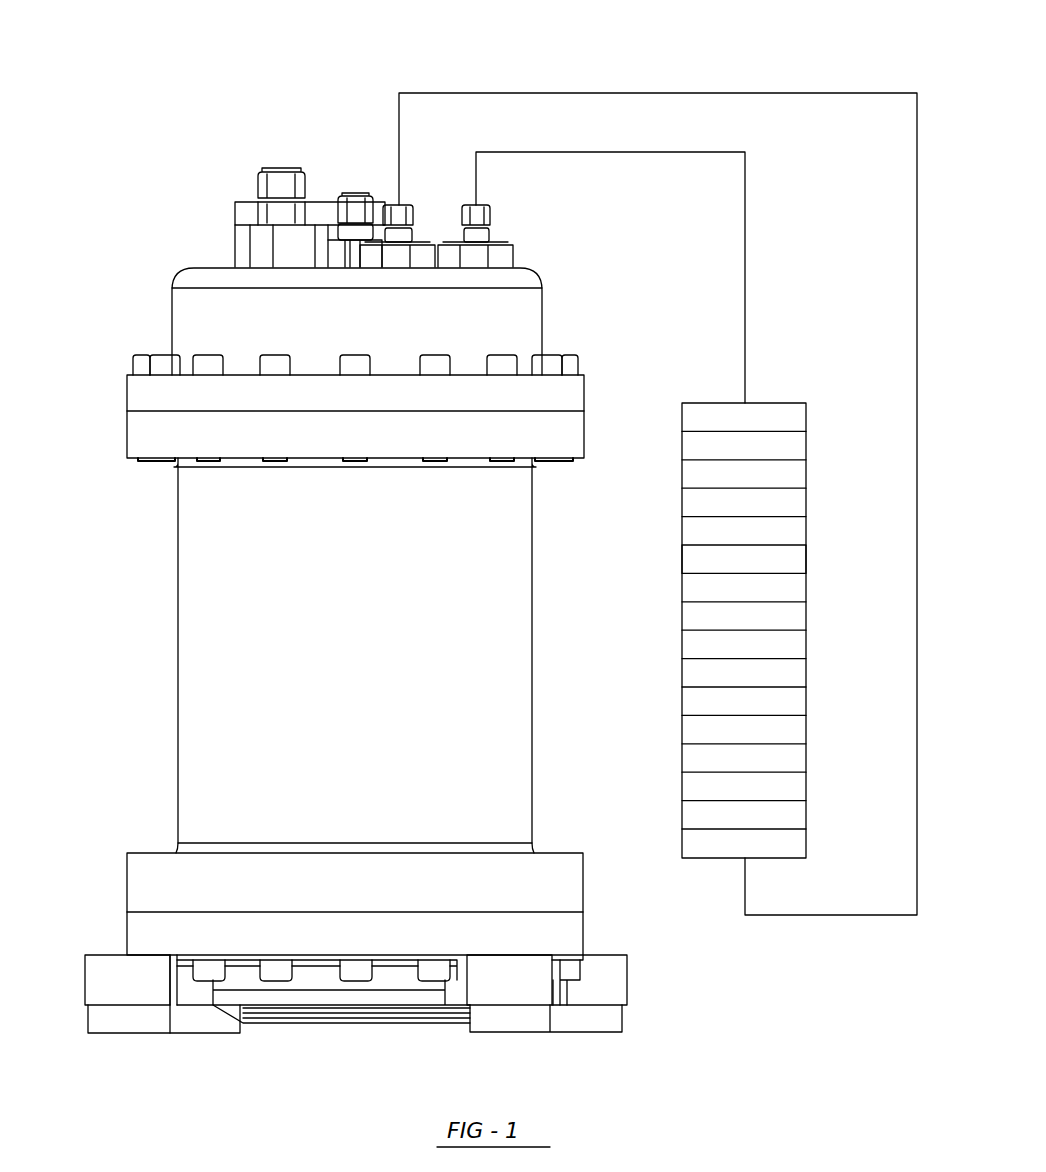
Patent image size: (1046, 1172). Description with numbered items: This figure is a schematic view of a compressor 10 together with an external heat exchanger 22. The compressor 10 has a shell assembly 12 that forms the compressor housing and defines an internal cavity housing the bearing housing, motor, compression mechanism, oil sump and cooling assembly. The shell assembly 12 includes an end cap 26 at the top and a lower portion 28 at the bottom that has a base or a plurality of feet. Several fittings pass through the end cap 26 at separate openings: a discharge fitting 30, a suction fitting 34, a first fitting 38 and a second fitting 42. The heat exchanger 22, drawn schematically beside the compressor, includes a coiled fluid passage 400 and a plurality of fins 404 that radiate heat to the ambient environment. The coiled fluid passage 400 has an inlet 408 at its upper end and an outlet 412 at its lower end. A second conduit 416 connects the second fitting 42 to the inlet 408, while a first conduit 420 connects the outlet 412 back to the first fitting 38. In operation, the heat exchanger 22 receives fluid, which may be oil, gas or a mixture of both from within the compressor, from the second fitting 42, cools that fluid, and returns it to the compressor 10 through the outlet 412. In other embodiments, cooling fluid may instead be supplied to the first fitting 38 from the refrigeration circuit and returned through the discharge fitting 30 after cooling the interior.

The compressor 10 is at (150, 126).
The shell assembly 12 is at (178, 565).
The heat exchanger 22 is at (786, 574).
The end cap 26 is at (172, 313).
The lower portion 28 is at (124, 887).
The discharge fitting 30 is at (357, 197).
The suction fitting 34 is at (257, 175).
The first fitting 38 is at (407, 207).
The second fitting 42 is at (490, 215).
The coiled fluid passage 400 is at (792, 585).
The fins 404 is at (800, 621).
The inlet 408 is at (745, 403).
The outlet 412 is at (745, 858).
The second conduit 416 is at (623, 131).
The first conduit 420 is at (917, 217).